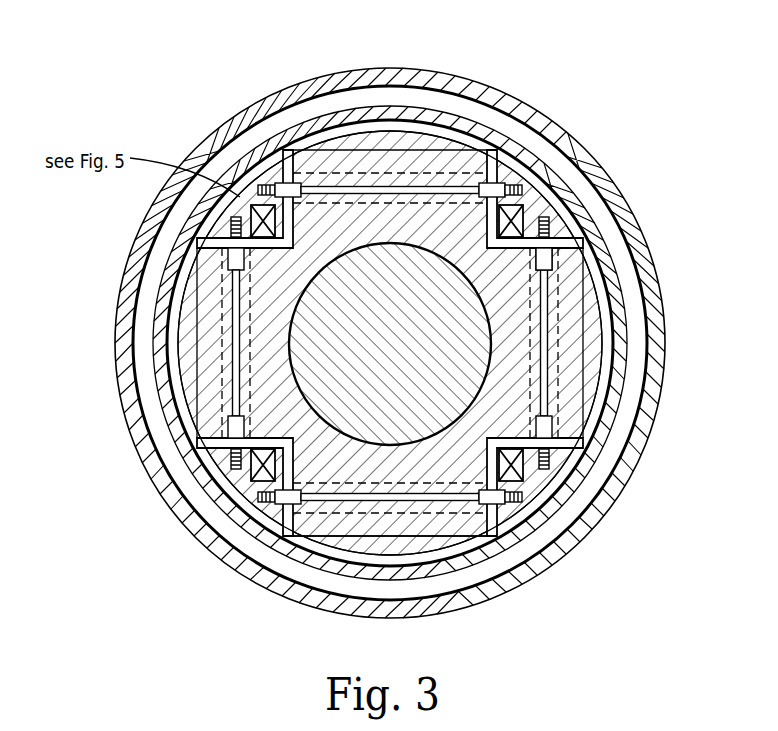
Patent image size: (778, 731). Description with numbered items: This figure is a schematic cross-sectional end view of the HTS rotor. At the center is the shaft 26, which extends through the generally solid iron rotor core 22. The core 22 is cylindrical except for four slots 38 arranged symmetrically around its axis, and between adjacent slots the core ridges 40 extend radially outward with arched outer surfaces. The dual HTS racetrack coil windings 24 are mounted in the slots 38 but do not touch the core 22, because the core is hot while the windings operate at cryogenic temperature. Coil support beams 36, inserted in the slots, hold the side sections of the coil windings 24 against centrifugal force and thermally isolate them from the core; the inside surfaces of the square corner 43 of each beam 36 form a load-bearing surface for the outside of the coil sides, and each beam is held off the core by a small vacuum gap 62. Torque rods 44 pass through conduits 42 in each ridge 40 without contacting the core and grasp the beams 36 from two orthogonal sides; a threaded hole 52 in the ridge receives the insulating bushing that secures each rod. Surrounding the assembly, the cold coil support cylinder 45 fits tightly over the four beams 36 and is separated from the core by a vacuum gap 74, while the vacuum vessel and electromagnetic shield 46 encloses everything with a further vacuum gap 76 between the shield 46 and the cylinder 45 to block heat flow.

The rotor core 22 is at (382, 230).
The coil winding 24 is at (233, 546).
The shaft 26 is at (396, 352).
The coil support beam 36 is at (560, 462).
The slot 38 is at (296, 245).
The core ridge 40 is at (362, 152).
The conduit 42 is at (560, 330).
The corner 43 is at (553, 478).
The torque rod 44 is at (548, 378).
The coil support cylinder 45 is at (212, 295).
The vacuum vessel and electromagnetic shield 46 is at (168, 328).
The threaded hole 52 is at (552, 247).
The vacuum gap 62 is at (257, 204).
The vacuum gap 74 is at (213, 385).
The vacuum gap 76 is at (432, 523).